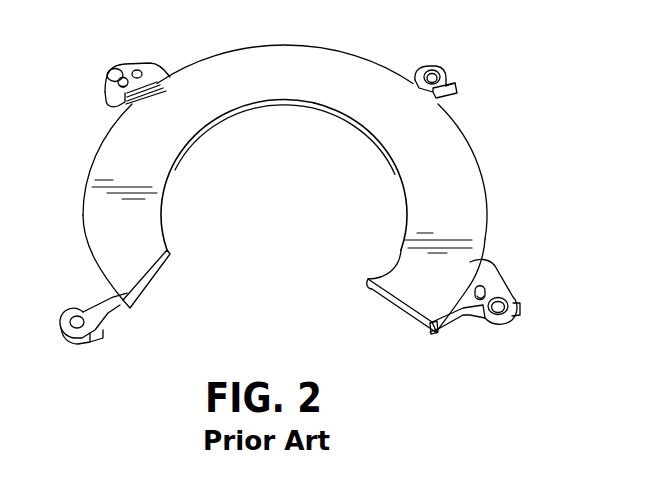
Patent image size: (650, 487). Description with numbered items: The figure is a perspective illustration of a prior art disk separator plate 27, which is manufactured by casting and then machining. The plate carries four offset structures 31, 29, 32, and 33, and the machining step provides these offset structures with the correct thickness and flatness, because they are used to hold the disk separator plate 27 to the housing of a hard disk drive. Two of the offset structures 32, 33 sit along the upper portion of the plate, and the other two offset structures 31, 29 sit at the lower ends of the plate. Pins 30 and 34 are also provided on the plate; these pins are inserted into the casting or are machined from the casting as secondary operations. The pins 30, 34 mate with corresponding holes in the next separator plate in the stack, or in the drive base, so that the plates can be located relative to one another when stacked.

The disk separator plate 27 is at (372, 62).
The offset structure 29 is at (515, 299).
The pin 30 is at (482, 284).
The offset structure 31 is at (80, 314).
The offset structure 32 is at (132, 65).
The offset structure 33 is at (455, 88).
The pin 34 is at (119, 80).